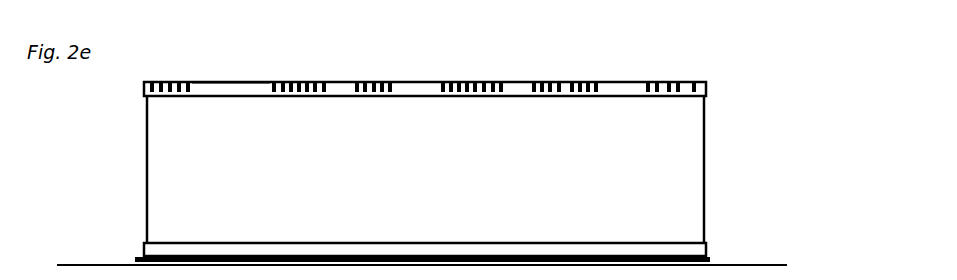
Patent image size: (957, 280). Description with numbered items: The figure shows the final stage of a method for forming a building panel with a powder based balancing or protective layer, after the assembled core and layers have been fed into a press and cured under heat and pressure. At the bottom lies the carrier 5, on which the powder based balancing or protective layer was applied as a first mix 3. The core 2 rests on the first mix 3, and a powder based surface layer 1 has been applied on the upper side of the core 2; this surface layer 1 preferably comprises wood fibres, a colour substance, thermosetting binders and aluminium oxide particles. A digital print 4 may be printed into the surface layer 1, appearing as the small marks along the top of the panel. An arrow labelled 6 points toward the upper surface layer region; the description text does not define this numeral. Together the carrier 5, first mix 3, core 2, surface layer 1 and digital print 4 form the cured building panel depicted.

The surface layer 1 is at (708, 90).
The core 2 is at (680, 167).
The first mix 3 is at (703, 248).
The digital print 4 is at (303, 82).
The carrier 5 is at (706, 260).
The gap between contact groups 6 is at (195, 76).